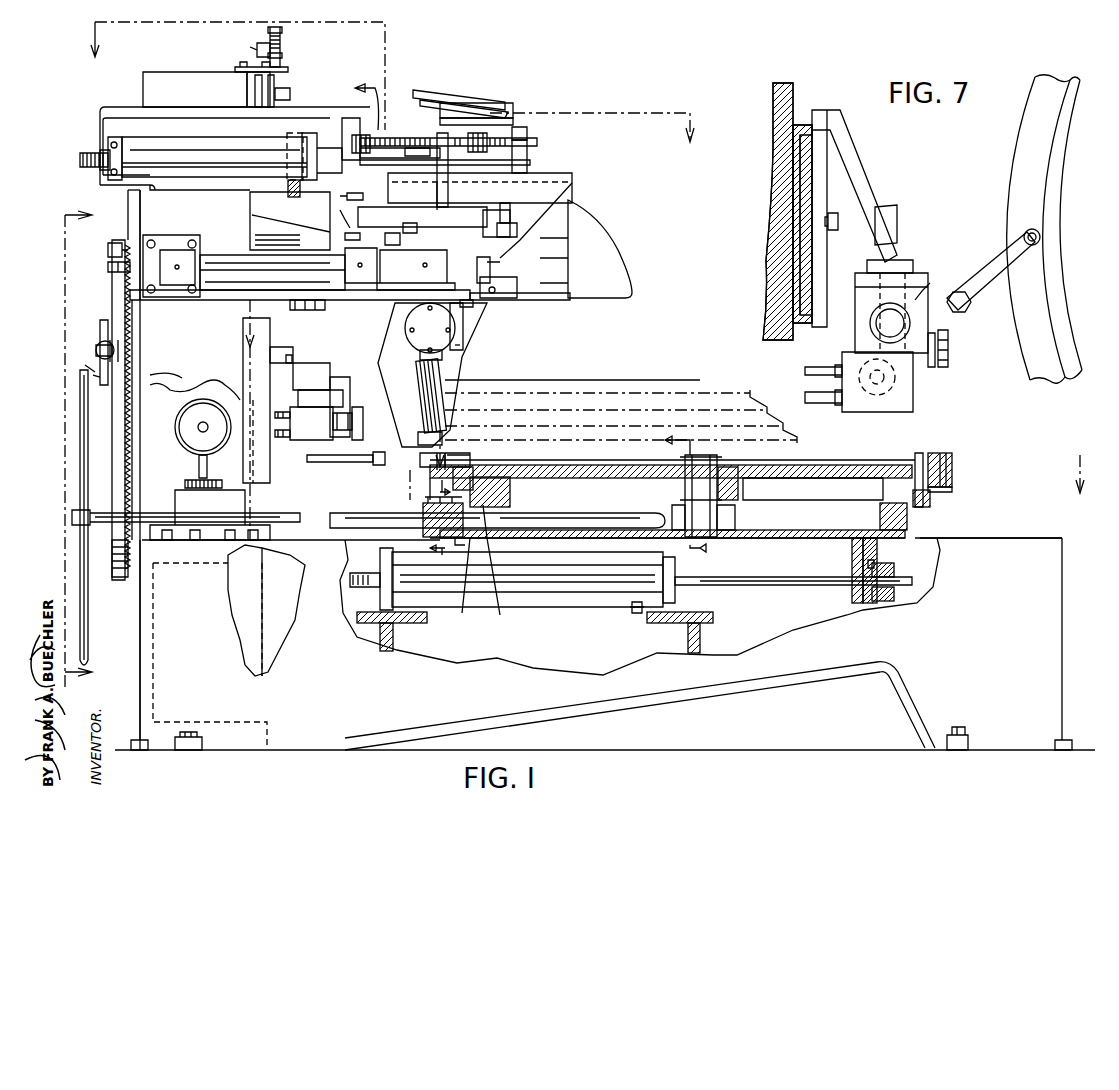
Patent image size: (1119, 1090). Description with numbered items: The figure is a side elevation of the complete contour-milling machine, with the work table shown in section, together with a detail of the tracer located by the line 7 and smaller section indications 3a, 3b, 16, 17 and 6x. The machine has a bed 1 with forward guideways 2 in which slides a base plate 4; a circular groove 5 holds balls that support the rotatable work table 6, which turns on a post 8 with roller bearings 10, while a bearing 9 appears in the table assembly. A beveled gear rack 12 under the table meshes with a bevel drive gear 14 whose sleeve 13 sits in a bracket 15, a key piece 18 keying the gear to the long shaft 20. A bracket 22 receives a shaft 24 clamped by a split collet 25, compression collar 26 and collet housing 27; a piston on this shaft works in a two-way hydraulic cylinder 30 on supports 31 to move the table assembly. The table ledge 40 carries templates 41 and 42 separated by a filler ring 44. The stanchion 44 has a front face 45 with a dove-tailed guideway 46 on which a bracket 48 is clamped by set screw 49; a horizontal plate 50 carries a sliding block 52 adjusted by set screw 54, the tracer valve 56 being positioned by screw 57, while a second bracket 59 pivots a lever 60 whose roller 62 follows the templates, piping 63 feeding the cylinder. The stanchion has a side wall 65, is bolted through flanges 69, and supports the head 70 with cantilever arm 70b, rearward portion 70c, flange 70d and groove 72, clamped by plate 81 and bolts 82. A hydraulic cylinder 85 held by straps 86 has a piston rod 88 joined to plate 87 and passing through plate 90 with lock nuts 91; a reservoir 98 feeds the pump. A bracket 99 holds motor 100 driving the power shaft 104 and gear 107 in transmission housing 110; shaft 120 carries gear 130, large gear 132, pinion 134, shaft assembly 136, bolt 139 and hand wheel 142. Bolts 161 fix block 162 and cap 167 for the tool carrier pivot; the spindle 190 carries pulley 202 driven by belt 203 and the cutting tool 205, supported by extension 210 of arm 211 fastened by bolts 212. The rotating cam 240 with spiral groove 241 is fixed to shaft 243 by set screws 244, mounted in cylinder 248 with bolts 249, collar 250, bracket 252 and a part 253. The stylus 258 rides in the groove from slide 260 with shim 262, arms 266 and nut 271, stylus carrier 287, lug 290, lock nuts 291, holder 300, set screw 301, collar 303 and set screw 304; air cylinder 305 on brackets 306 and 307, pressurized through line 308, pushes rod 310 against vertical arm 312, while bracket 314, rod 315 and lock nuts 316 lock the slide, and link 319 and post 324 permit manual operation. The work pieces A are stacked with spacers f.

In FIG. 1, the bed 1 is at (1060, 648).
In FIG. 1, the guideways 2 is at (946, 531).
In FIG. 1, the base plate 4 is at (905, 510).
In FIG. 1, the circular groove 5 is at (925, 497).
In FIG. 1, the work table 6 is at (880, 468).
In FIG. 1, the post 8 is at (717, 462).
In FIG. 1, the bearing 9 is at (735, 518).
In FIG. 1, the roller bearings 10 is at (730, 470).
In FIG. 1, the circular beveled gear rack 12 is at (510, 488).
In FIG. 1, the stem or sleeve 13 is at (466, 584).
In FIG. 1, the bevel drive gear 14 is at (499, 571).
In FIG. 1, the bracket 15 is at (520, 470).
In FIG. 1, the key piece 18 is at (423, 510).
In FIG. 1, the shaft 20 is at (592, 515).
In FIG. 1, the bracket 22 is at (852, 562).
In FIG. 1, the shaft 24 is at (800, 585).
In FIG. 1, the split collet 25 is at (894, 568).
In FIG. 1, the compression collar 26 is at (894, 594).
In FIG. 1, the collet housing 27 is at (874, 563).
In FIG. 1, the two-way hydraulic cylinder 30 is at (608, 608).
In FIG. 1, the supports 31 is at (393, 640).
In FIG. 1, the ledge 40 is at (952, 490).
In FIG. 1, the upper template 41 is at (450, 463).
In FIG. 7, the upper template 41 is at (1043, 290).
In FIG. 1, the lower template 42 is at (440, 465).
In FIG. 7, the lower template 42 is at (1013, 330).
In FIG. 1, the stanchion 44 is at (462, 465).
In FIG. 1, the front face 45 is at (255, 500).
In FIG. 7, the front face 45 is at (770, 240).
In FIG. 1, the vertical dove-tailed guideway 46 is at (275, 347).
In FIG. 7, the vertical dove-tailed guideway 46 is at (812, 165).
In FIG. 1, the bracket 48 is at (315, 365).
In FIG. 7, the bracket 48 is at (862, 178).
In FIG. 1, the set screw 49 is at (290, 355).
In FIG. 7, the set screw 49 is at (838, 218).
In FIG. 1, the horizontal plate 50 is at (330, 390).
In FIG. 7, the horizontal plate 50 is at (928, 282).
In FIG. 1, the sliding block 52 is at (345, 390).
In FIG. 7, the set screw 54 is at (897, 245).
In FIG. 1, the tracer valve 56 is at (307, 433).
In FIG. 7, the tracer valve 56 is at (905, 402).
In FIG. 1, the screw 57 is at (350, 415).
In FIG. 7, the screw 57 is at (948, 345).
In FIG. 1, the second bracket 59 is at (362, 438).
In FIG. 7, the second bracket 59 is at (925, 262).
In FIG. 1, the lever 60 is at (360, 462).
In FIG. 7, the lever 60 is at (990, 275).
In FIG. 1, the roller 62 is at (383, 465).
In FIG. 7, the roller 62 is at (1030, 229).
In FIG. 1, the piping 63 is at (362, 570).
In FIG. 7, the piping 63 is at (805, 380).
In FIG. 1, the side wall 65 is at (166, 386).
In FIG. 1, the lower flanges 69 is at (168, 530).
In FIG. 1, the head 70 is at (202, 118).
In FIG. 1, the cantilever arm 70b is at (620, 265).
In FIG. 1, the rearwardly extending portion 70c is at (240, 217).
In FIG. 1, the flange 70d is at (107, 120).
In FIG. 1, the dove-tailed groove 72 is at (250, 107).
In FIG. 1, the vertical plate 81 is at (140, 218).
In FIG. 1, the bolts 82 is at (128, 215).
In FIG. 1, the hydraulic cylinder 85 is at (290, 94).
In FIG. 1, the straps and bolts 86 is at (265, 95).
In FIG. 1, the plate 87 is at (310, 312).
In FIG. 1, the piston rod 88 is at (280, 42).
In FIG. 1, the plate 90 is at (288, 70).
In FIG. 1, the lock nuts 91 is at (257, 50).
In FIG. 1, the reservoir 98 is at (262, 597).
In FIG. 1, the bracket 99 is at (222, 380).
In FIG. 1, the motor 100 is at (186, 437).
In FIG. 1, the vertical power shaft 104 is at (199, 466).
In FIG. 1, the gear 107 is at (185, 484).
In FIG. 1, the transmission housing 110 is at (212, 507).
In FIG. 1, the shaft 120 is at (72, 517).
In FIG. 1, the driving gear 130 is at (118, 580).
In FIG. 1, the large gear 132 is at (100, 370).
In FIG. 1, the pinion 134 is at (108, 250).
In FIG. 1, the shaft assembly 136 is at (85, 385).
In FIG. 1, the bolt 139 is at (96, 350).
In FIG. 1, the hand wheel 142 is at (80, 462).
In FIG. 1, the bolts 161 is at (473, 305).
In FIG. 1, the block 162 is at (463, 320).
In FIG. 1, the cap 167 is at (455, 342).
In FIG. 1, the tool spindle 190 is at (442, 356).
In FIG. 1, the pulley 202 is at (460, 100).
In FIG. 1, the belt 203 is at (500, 100).
In FIG. 1, the cutting tool 205 is at (442, 375).
In FIG. 1, the horizontal extension 210 is at (435, 420).
In FIG. 1, the arm or bracket 211 is at (382, 333).
In FIG. 1, the bolts 212 is at (415, 325).
In FIG. 1, the rotating cam 240 is at (370, 291).
In FIG. 1, the spiral groove 241 is at (395, 262).
In FIG. 1, the shaft 243 is at (212, 255).
In FIG. 1, the set screws 244 is at (345, 265).
In FIG. 1, the cylinder 248 is at (177, 255).
In FIG. 1, the bolts 249 is at (155, 240).
In FIG. 1, the threaded collar 250 is at (120, 268).
In FIG. 1, the bracket 252 is at (490, 268).
In FIG. 1, the block 253 is at (512, 287).
In FIG. 1, the stylus 258 is at (341, 216).
In FIG. 1, the slide 260 is at (565, 190).
In FIG. 1, the shim 262 is at (345, 236).
In FIG. 1, the parallel arms 266 is at (390, 172).
In FIG. 1, the nut 271 is at (400, 151).
In FIG. 1, the stylus carrier slide block 287 is at (485, 215).
In FIG. 1, the lug 290 is at (510, 212).
In FIG. 1, the lock nuts 291 is at (517, 230).
In FIG. 1, the stylus holder 300 is at (393, 205).
In FIG. 1, the set screw 301 is at (340, 196).
In FIG. 1, the collar 303 is at (400, 240).
In FIG. 1, the set screw 304 is at (417, 230).
In FIG. 1, the air cylinder 305 is at (188, 177).
In FIG. 1, the bracket 306 is at (120, 140).
In FIG. 1, the bracket 307 is at (287, 130).
In FIG. 1, the line 308 is at (80, 160).
In FIG. 1, the rod 310 is at (412, 110).
In FIG. 1, the vertical arm 312 is at (448, 198).
In FIG. 1, the bracket 314 is at (340, 118).
In FIG. 1, the rod 315 is at (527, 135).
In FIG. 1, the lock nuts 316 is at (362, 135).
In FIG. 1, the link 319 is at (428, 90).
In FIG. 1, the post 324 is at (527, 160).
In FIG. 1, the work piece A is at (598, 415).
In FIG. 1, the spacers f is at (700, 410).
In FIG. 1, the section line 3a is at (693, 498).
In FIG. 1, the section line 3b is at (448, 514).
In FIG. 1, the line 7— 7 is at (350, 420).
In FIG. 1, the section line 16 is at (361, 95).
In FIG. 1, the section line 17 is at (737, 484).
In FIG. 1, the section line 6 6x is at (87, 450).